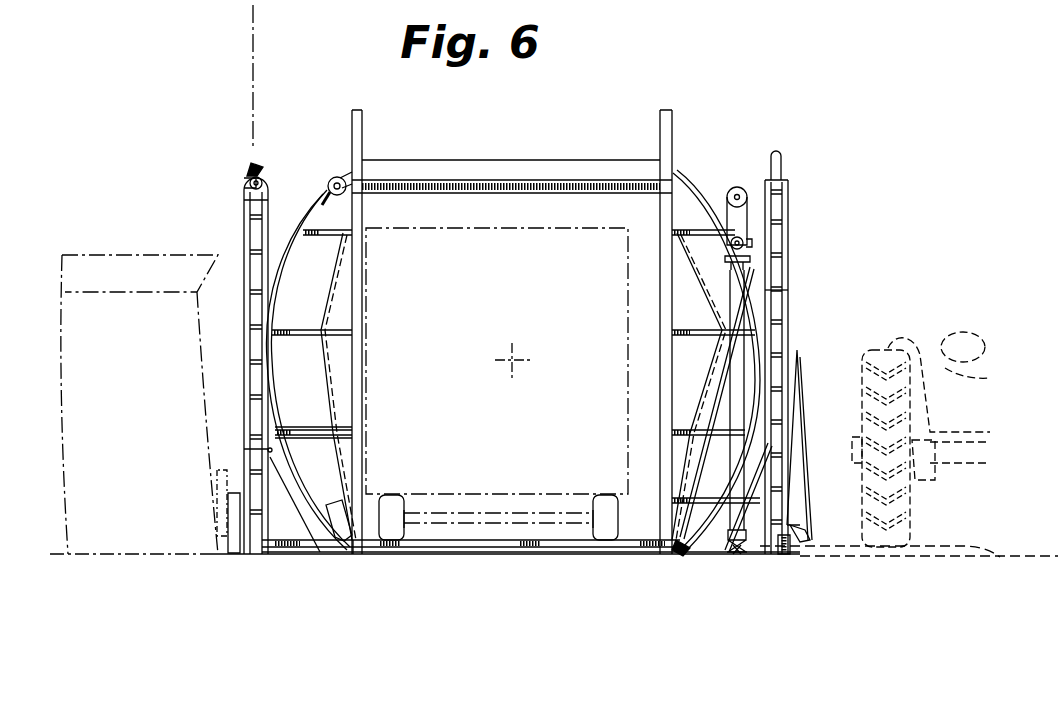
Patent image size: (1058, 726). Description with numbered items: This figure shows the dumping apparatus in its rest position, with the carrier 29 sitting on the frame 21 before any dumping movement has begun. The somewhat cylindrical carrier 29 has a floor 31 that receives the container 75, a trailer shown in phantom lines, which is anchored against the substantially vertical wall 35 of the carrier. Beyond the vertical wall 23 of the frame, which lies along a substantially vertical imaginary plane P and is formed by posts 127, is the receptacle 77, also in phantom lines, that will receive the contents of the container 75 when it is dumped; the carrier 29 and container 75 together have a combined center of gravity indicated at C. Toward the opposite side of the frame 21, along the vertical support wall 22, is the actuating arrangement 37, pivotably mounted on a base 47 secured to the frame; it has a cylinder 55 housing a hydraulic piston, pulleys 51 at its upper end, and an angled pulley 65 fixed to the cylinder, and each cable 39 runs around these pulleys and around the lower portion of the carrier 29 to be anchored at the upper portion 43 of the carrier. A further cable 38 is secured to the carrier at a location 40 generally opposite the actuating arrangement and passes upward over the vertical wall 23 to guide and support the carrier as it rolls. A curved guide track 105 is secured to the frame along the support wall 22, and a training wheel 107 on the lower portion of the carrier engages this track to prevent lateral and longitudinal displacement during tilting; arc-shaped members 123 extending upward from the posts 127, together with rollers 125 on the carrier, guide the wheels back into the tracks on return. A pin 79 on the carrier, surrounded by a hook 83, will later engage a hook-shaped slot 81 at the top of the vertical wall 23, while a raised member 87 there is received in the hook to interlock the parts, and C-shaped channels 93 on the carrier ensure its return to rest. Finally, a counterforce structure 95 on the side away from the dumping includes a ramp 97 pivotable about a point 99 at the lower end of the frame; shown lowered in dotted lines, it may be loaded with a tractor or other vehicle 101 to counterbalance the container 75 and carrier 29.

The frame 21 is at (409, 562).
The vertical support wall 22 is at (801, 212).
The vertical wall 23 is at (243, 229).
The carrier 29 is at (694, 172).
The floor 31 is at (525, 553).
The vertical wall 35 is at (363, 136).
The actuating arrangement 37 is at (746, 186).
The cable 38 is at (269, 200).
The cable 39 is at (337, 250).
The location 40 is at (278, 431).
The upper portion 43 is at (340, 232).
The base 47 is at (736, 552).
The pulleys 51 is at (750, 200).
The cylinder 55 is at (738, 472).
The angled pulley 65 is at (749, 243).
The container 75 is at (462, 232).
The receptacle 77 is at (120, 537).
The pin 79 is at (331, 182).
The hook-shaped slot 81 is at (250, 170).
The hook 83 is at (347, 190).
The raised member 87 is at (248, 181).
The C-shaped channels 93 is at (343, 512).
The counterforce structure 95 is at (806, 502).
The ramp 97 is at (790, 393).
The point 99 is at (786, 547).
The vehicle 101 is at (912, 338).
The curved guide track 105 is at (720, 466).
The training wheel 107 is at (690, 548).
The arc-shaped members 123 is at (780, 158).
The rollers 125 is at (680, 548).
The posts 127 is at (790, 283).
The center of gravity C is at (515, 358).
The imaginary plane P is at (249, 69).